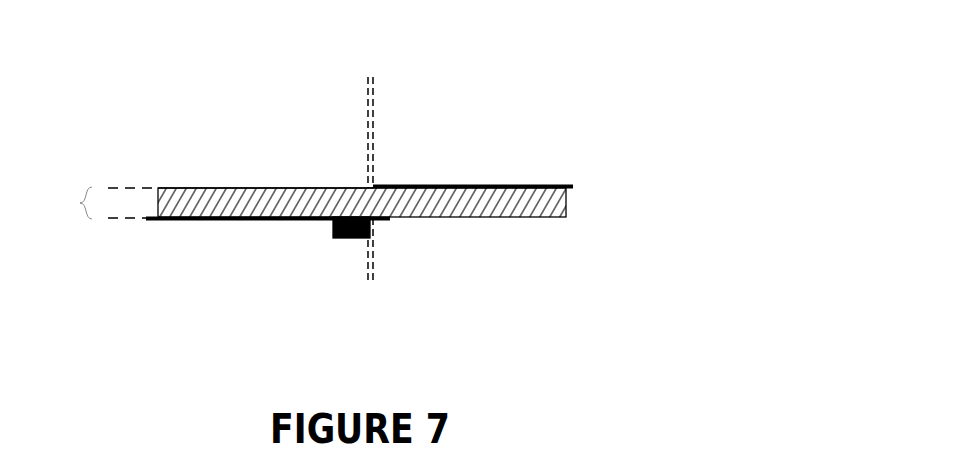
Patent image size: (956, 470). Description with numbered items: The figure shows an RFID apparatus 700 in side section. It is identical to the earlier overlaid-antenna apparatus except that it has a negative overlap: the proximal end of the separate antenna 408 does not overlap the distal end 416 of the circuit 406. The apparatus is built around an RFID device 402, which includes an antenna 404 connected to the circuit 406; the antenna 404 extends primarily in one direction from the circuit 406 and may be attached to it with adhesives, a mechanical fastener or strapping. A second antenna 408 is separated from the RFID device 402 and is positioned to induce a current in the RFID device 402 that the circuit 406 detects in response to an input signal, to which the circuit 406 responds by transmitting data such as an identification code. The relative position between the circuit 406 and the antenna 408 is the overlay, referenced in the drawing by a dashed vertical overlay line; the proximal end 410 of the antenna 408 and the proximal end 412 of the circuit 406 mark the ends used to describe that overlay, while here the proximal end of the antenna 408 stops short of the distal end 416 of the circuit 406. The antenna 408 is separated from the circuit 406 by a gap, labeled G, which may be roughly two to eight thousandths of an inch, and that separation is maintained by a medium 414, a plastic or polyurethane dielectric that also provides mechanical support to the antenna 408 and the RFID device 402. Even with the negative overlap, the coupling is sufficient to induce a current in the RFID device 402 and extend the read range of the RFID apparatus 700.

The RFID apparatus 700 is at (619, 112).
The RFID device 402 is at (247, 271).
The antenna 404 is at (200, 220).
The circuit 406 is at (373, 238).
The antenna 408 is at (395, 186).
The proximal end of antenna 410 is at (322, 182).
The proximal end of circuit 412 is at (328, 234).
The medium 414 is at (514, 217).
The distal end of circuit 416 is at (382, 240).